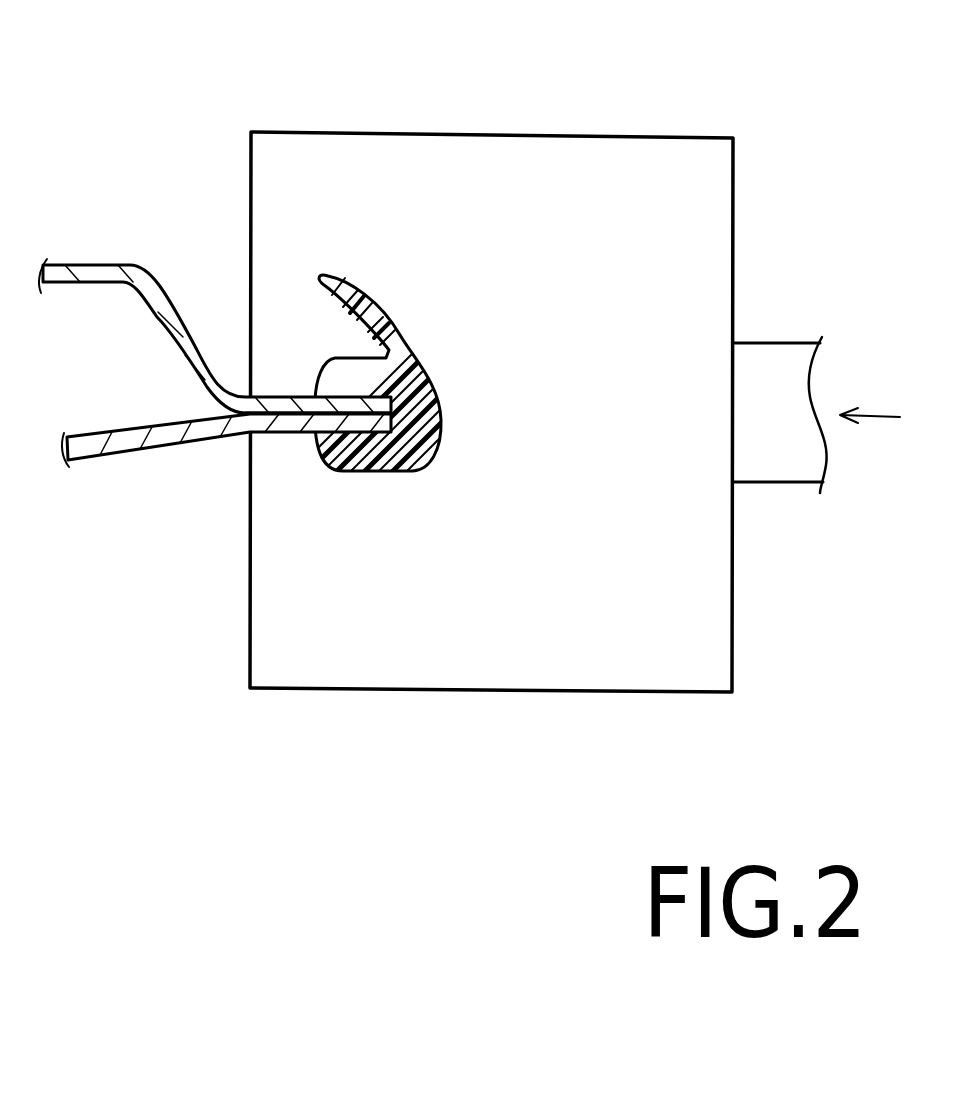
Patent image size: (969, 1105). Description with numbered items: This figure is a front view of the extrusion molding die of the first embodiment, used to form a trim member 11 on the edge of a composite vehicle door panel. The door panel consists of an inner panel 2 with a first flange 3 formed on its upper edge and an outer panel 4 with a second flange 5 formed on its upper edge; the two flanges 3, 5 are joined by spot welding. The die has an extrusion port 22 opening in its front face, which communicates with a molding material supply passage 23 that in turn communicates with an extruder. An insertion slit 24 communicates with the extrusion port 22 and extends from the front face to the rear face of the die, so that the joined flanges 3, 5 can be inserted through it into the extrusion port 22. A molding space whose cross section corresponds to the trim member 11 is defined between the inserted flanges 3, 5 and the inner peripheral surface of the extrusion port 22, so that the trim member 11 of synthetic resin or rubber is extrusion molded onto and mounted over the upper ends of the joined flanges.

The inner panel 2 is at (120, 455).
The first flange 3 is at (307, 420).
The outer panel 4 is at (98, 267).
The second flange 5 is at (283, 397).
The trim member 11 is at (408, 318).
The extrusion port 22 is at (637, 128).
The molding material supply passage 23 is at (780, 468).
The insertion slit 24 is at (300, 433).